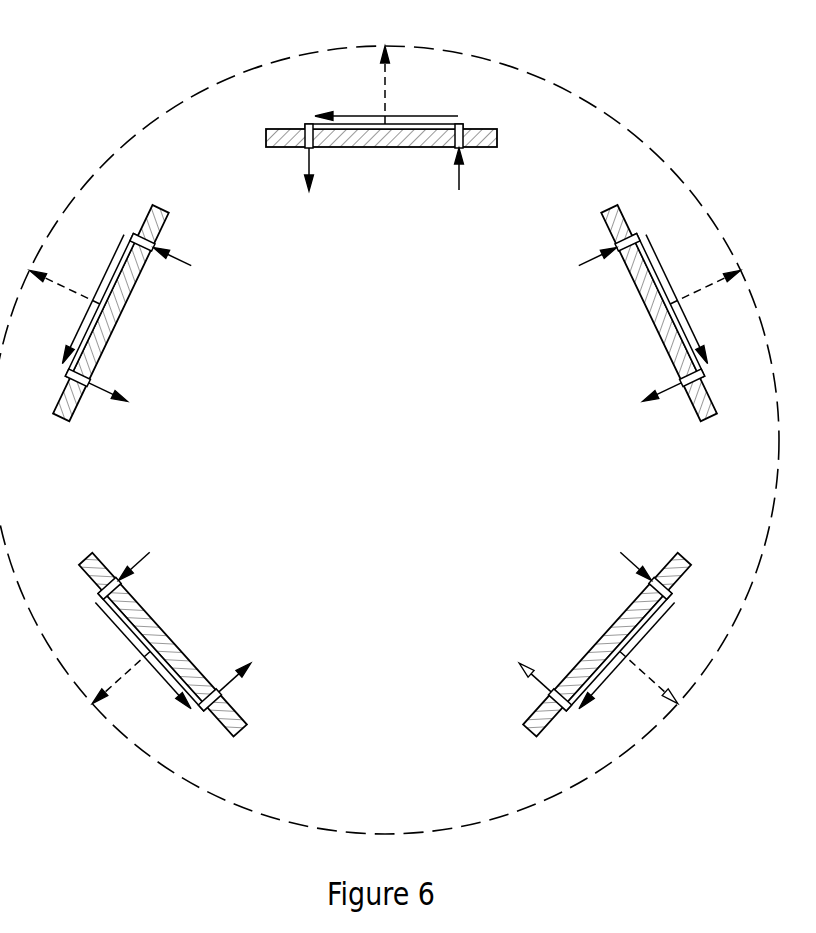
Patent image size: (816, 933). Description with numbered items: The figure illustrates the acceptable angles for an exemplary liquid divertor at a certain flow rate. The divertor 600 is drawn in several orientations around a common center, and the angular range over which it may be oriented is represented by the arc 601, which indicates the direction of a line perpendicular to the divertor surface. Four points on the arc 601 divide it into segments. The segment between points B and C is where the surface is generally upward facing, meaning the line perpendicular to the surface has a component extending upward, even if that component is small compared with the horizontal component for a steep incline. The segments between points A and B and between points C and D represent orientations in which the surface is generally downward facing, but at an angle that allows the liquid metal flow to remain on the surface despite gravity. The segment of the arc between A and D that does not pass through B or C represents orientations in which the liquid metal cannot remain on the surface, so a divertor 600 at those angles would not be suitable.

The divertor 600 is at (396, 419).
The arc 601 is at (143, 128).
The point A is at (148, 657).
The point B is at (104, 321).
The point C is at (677, 322).
The point D is at (621, 657).